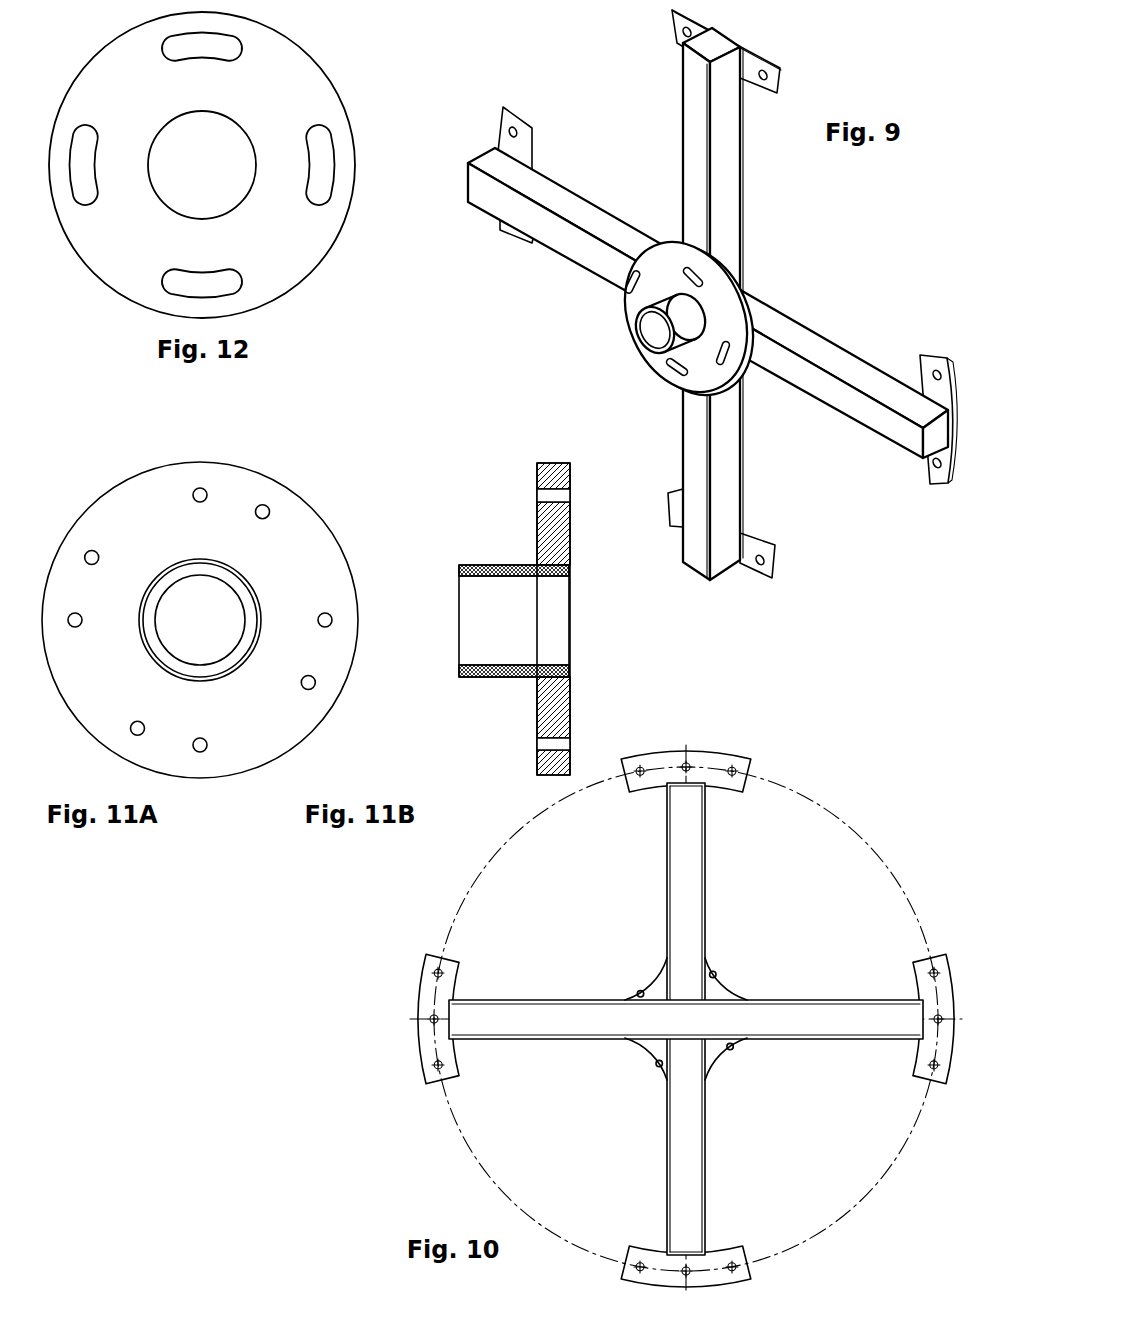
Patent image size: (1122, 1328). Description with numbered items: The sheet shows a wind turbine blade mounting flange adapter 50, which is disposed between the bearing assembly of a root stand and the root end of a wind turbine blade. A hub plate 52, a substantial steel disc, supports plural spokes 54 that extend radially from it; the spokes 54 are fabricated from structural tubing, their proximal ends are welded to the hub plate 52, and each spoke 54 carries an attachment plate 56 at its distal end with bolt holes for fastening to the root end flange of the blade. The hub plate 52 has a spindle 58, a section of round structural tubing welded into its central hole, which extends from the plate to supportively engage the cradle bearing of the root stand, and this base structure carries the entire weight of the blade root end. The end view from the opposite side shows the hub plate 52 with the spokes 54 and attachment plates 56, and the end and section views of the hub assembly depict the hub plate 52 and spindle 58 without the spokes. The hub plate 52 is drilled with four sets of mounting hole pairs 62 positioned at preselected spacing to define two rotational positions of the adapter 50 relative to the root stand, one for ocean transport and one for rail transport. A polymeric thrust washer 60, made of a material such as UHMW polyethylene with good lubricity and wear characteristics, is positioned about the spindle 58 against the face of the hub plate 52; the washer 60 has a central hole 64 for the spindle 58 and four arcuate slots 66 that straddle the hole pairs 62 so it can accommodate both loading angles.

In FIG. 10, the wind turbine blade mounting flange adapter 50 is at (686, 1020).
In FIG. 9, the wind turbine blade mounting flange adapter 50 is at (712, 295).
In FIG. 11A, the hub plate 52 is at (200, 620).
In FIG. 11B, the hub plate 52 is at (530, 619).
In FIG. 10, the hub plate 52 is at (706, 1011).
In FIG. 9, the hub plate 52 is at (735, 295).
In FIG. 10, the spokes 54 is at (558, 1001).
In FIG. 9, the spokes 54 is at (684, 139).
In FIG. 10, the attachment plate 56 is at (626, 790).
In FIG. 9, the attachment plate 56 is at (674, 30).
In FIG. 11A, the spindle 58 is at (190, 561).
In FIG. 11B, the spindle 58 is at (479, 565).
In FIG. 9, the spindle 58 is at (634, 310).
In FIG. 12, the thrust washer 60 is at (205, 165).
In FIG. 9, the thrust washer 60 is at (707, 317).
In FIG. 11A, the mounting holes 62 is at (206, 501).
In FIG. 11B, the mounting holes 62 is at (536, 497).
In FIG. 10, the mounting holes 62 is at (715, 972).
In FIG. 12, the central hole 64 is at (252, 186).
In FIG. 12, the arcuate slots 66 is at (177, 60).